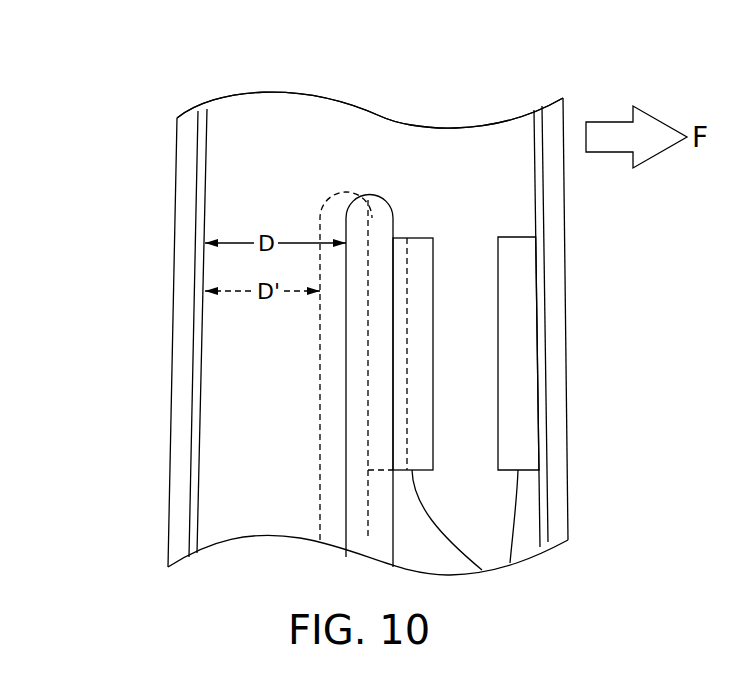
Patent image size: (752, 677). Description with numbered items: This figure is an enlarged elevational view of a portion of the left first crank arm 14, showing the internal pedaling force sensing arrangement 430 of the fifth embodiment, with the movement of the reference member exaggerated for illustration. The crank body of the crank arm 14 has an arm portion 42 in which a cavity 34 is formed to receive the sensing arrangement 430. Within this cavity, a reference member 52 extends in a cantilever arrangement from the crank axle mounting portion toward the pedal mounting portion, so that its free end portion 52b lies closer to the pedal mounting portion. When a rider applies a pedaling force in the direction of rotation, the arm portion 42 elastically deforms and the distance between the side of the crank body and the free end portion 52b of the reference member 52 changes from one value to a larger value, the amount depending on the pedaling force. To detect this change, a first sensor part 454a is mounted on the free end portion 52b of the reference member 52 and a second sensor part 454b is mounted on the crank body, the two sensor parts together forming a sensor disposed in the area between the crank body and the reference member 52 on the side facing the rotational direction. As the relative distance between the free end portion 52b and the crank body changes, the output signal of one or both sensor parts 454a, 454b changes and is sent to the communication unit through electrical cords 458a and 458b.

The first crank arm 14 is at (112, 197).
The cavity 34 is at (262, 133).
The arm portion 42 is at (174, 413).
The reference member 52 is at (346, 465).
The free end portion 52b is at (394, 217).
The internal pedaling force sensing arrangement 430 is at (471, 158).
The first sensor part 454a is at (498, 273).
The second sensor part 454b is at (433, 438).
The electrical cord 458a is at (517, 502).
The electrical cord 458b is at (443, 527).